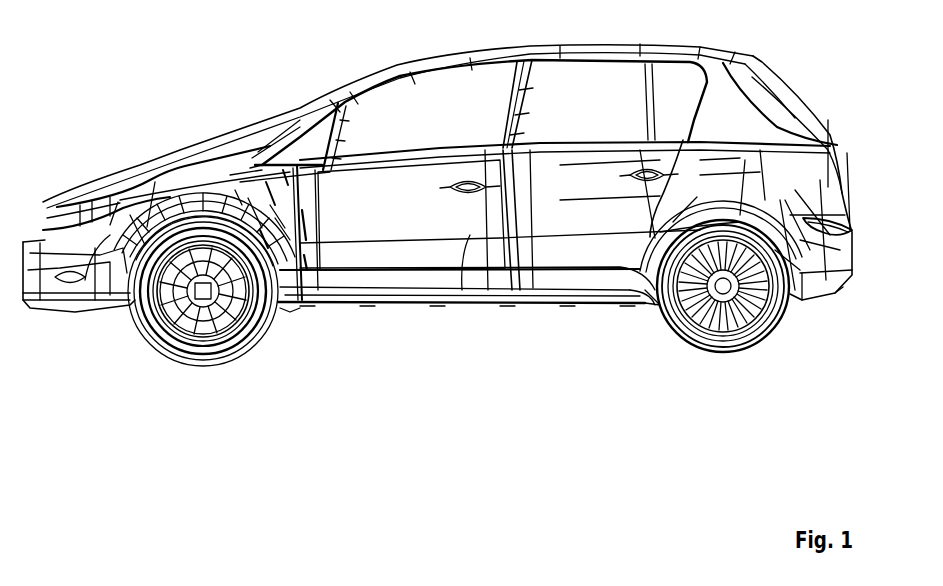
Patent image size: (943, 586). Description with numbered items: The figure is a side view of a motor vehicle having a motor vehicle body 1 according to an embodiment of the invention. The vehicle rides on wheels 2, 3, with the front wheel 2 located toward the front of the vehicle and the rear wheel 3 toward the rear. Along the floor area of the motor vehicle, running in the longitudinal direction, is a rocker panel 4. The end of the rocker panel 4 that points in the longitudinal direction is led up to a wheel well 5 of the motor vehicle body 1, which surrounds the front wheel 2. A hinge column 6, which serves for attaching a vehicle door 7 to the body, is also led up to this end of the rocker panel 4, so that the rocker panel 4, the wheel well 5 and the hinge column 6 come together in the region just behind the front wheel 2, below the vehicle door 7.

The motor vehicle body 1 is at (619, 313).
The wheel 2 is at (175, 335).
The wheel 3 is at (750, 322).
The rocker panel 4 is at (370, 304).
The wheel well 5 is at (180, 222).
The hinge column 6 is at (260, 160).
The vehicle door 7 is at (450, 253).